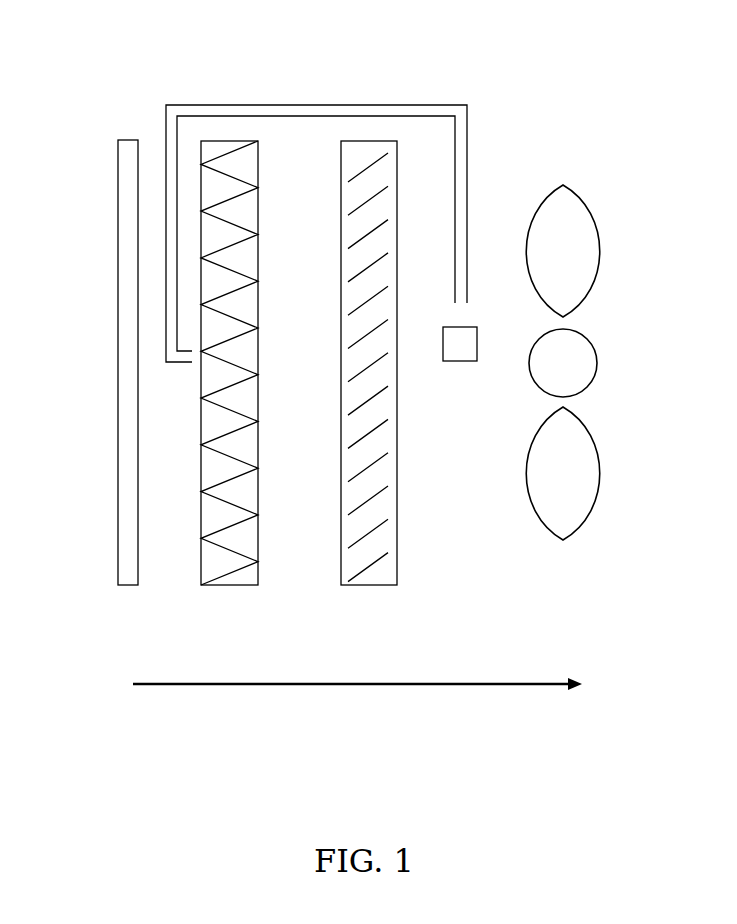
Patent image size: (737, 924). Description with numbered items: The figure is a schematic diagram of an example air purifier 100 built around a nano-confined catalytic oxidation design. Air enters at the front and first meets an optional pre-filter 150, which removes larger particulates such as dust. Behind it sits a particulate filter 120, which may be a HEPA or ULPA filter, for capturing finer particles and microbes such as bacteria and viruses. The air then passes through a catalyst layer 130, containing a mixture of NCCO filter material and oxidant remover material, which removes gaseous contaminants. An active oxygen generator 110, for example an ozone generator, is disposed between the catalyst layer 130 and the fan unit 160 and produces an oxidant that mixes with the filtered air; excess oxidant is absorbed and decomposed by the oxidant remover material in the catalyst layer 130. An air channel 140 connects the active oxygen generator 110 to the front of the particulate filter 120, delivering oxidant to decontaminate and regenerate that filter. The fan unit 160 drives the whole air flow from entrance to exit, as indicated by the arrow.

The air purifier 100 is at (114, 63).
The active oxygen generator 110 is at (468, 365).
The particulate filter 120 is at (258, 416).
The catalyst layer 130 is at (397, 515).
The air channel 140 is at (390, 105).
The pre-filter 150 is at (118, 187).
The fan unit 160 is at (597, 370).